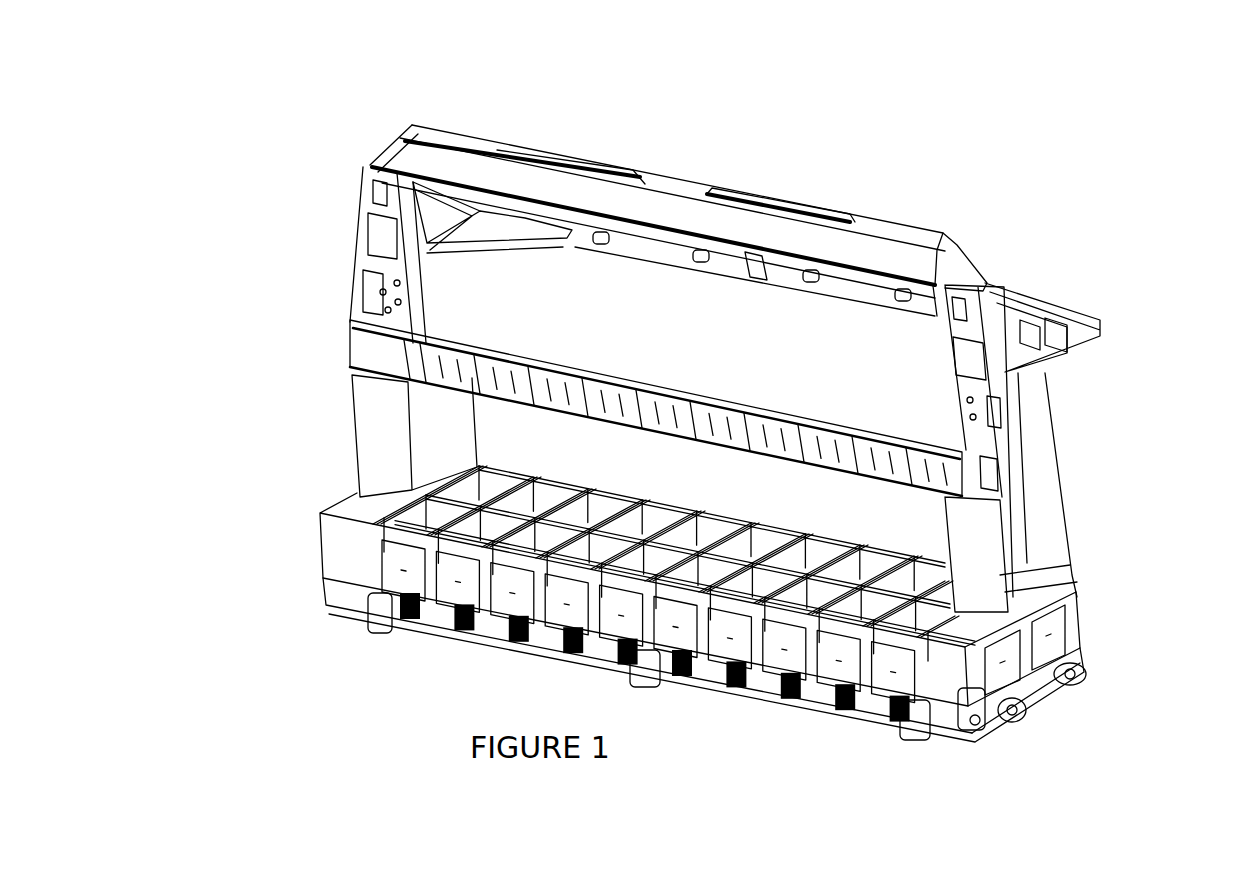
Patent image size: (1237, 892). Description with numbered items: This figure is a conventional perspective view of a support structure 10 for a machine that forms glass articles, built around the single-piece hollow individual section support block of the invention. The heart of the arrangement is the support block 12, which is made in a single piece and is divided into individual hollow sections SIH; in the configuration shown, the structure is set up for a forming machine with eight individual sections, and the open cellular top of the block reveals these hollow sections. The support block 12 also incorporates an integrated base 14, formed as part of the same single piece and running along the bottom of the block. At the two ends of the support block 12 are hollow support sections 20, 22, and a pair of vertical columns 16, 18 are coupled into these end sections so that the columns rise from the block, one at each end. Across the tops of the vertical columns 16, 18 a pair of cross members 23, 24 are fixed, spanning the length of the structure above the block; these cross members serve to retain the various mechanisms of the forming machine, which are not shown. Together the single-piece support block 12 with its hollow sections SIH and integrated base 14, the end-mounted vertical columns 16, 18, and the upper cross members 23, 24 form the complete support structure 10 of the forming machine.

The support structure 10 is at (977, 195).
The support block 12 is at (300, 553).
The integrated base 14 is at (355, 600).
The vertical column 16 is at (377, 438).
The vertical column 18 is at (1040, 520).
The hollow support section 20 is at (357, 553).
The hollow support section 22 is at (938, 687).
The cross member 23 is at (660, 383).
The cross member 24 is at (585, 205).
The individual hollow sections SIH is at (427, 520).